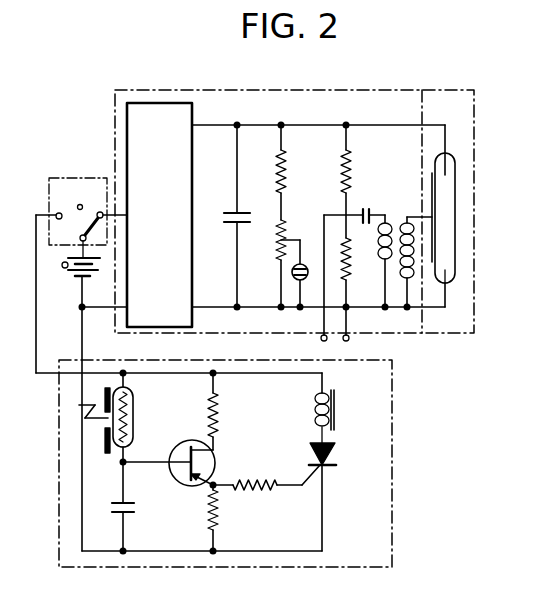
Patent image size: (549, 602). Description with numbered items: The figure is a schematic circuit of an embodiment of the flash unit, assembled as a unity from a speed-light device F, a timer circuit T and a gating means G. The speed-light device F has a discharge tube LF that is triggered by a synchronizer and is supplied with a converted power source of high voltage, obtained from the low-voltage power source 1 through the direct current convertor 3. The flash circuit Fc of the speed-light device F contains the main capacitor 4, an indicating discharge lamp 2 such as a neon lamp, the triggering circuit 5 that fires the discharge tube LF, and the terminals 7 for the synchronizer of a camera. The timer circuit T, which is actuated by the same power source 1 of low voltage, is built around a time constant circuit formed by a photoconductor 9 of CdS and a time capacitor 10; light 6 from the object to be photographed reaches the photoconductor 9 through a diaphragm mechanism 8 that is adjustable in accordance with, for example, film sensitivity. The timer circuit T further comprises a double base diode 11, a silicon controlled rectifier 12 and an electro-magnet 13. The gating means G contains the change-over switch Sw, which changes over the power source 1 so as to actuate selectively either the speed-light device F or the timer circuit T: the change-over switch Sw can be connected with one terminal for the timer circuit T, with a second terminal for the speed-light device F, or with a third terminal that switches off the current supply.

The power source 1 is at (86, 273).
The indicating discharge lamp 2 is at (306, 264).
The direct current convertor 3 is at (156, 112).
The main capacitor 4 is at (240, 211).
The triggering circuit 5 is at (386, 216).
The light from an object to be photographed 6 is at (79, 405).
The terminals for the synchronizer of a camera 7 is at (320, 340).
The diaphragm mechanism 8 is at (105, 442).
The photoconductor 9 is at (133, 407).
The time capacitor 10 is at (127, 503).
The double base diode 11 is at (186, 441).
The silicon controlled rectifier 12 is at (330, 446).
The electro-magnet 13 is at (336, 413).
The gating means G is at (88, 185).
The change-over switch Sw is at (63, 235).
The flash circuit Fc is at (292, 105).
The speed-light device F is at (452, 326).
The discharge tube LF is at (452, 224).
The timer circuit T is at (390, 452).